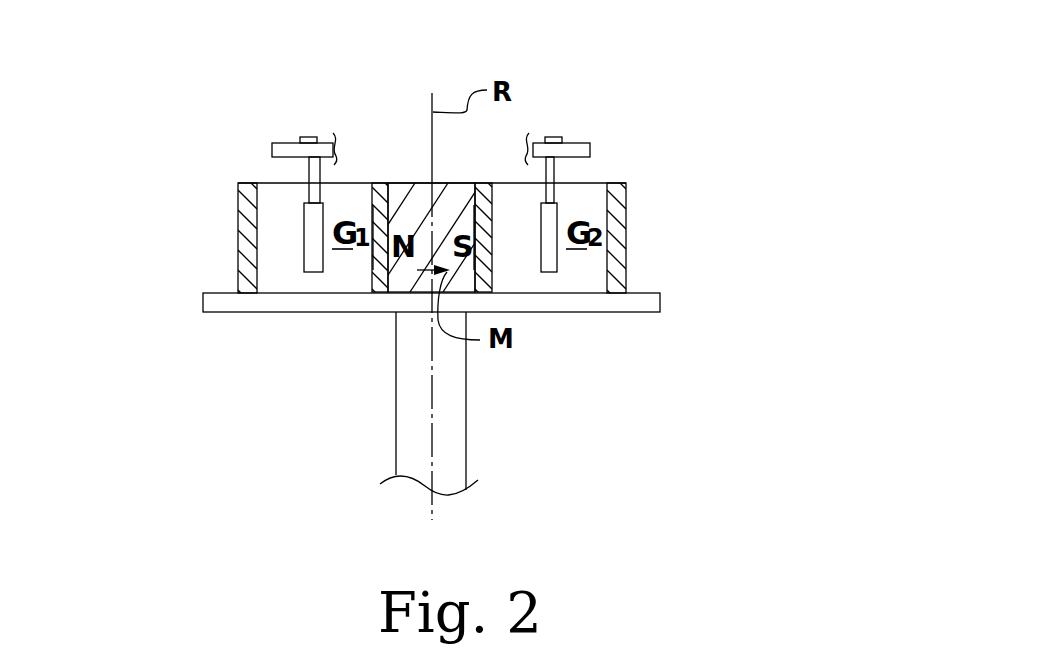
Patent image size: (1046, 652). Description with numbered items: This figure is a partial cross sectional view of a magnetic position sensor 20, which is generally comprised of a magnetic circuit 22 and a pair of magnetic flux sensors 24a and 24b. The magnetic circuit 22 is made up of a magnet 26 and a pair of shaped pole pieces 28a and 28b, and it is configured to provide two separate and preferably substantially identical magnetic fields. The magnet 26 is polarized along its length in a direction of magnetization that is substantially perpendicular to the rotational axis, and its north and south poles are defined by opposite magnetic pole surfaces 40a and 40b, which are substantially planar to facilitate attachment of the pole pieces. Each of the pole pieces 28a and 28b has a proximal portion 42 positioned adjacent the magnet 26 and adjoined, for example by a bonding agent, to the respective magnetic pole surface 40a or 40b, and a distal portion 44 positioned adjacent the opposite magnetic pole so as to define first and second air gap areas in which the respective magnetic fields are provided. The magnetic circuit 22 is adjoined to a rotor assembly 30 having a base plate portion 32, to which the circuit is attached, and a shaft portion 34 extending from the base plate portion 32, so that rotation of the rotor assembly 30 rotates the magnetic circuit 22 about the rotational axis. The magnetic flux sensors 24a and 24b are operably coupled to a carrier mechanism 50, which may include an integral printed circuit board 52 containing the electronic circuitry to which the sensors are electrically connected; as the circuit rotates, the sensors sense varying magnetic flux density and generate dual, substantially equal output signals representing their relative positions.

The magnetic position sensor 20 is at (198, 93).
The magnetic circuit 22 is at (460, 192).
The magnetic flux sensor 24a is at (310, 240).
The magnetic flux sensor 24b is at (553, 247).
The magnet 26 is at (440, 187).
The pole piece 28a is at (237, 277).
The pole piece 28b is at (622, 252).
The rotor assembly 30 is at (485, 341).
The base plate portion 32 is at (645, 303).
The shaft portion 34 is at (457, 448).
The magnetic pole surface 40a is at (480, 252).
The magnetic pole surface 40b is at (372, 250).
The proximal portion 42 is at (380, 198).
The distal portion 44 is at (247, 213).
The carrier mechanism 50 is at (252, 155).
The printed circuit board 52 is at (278, 146).